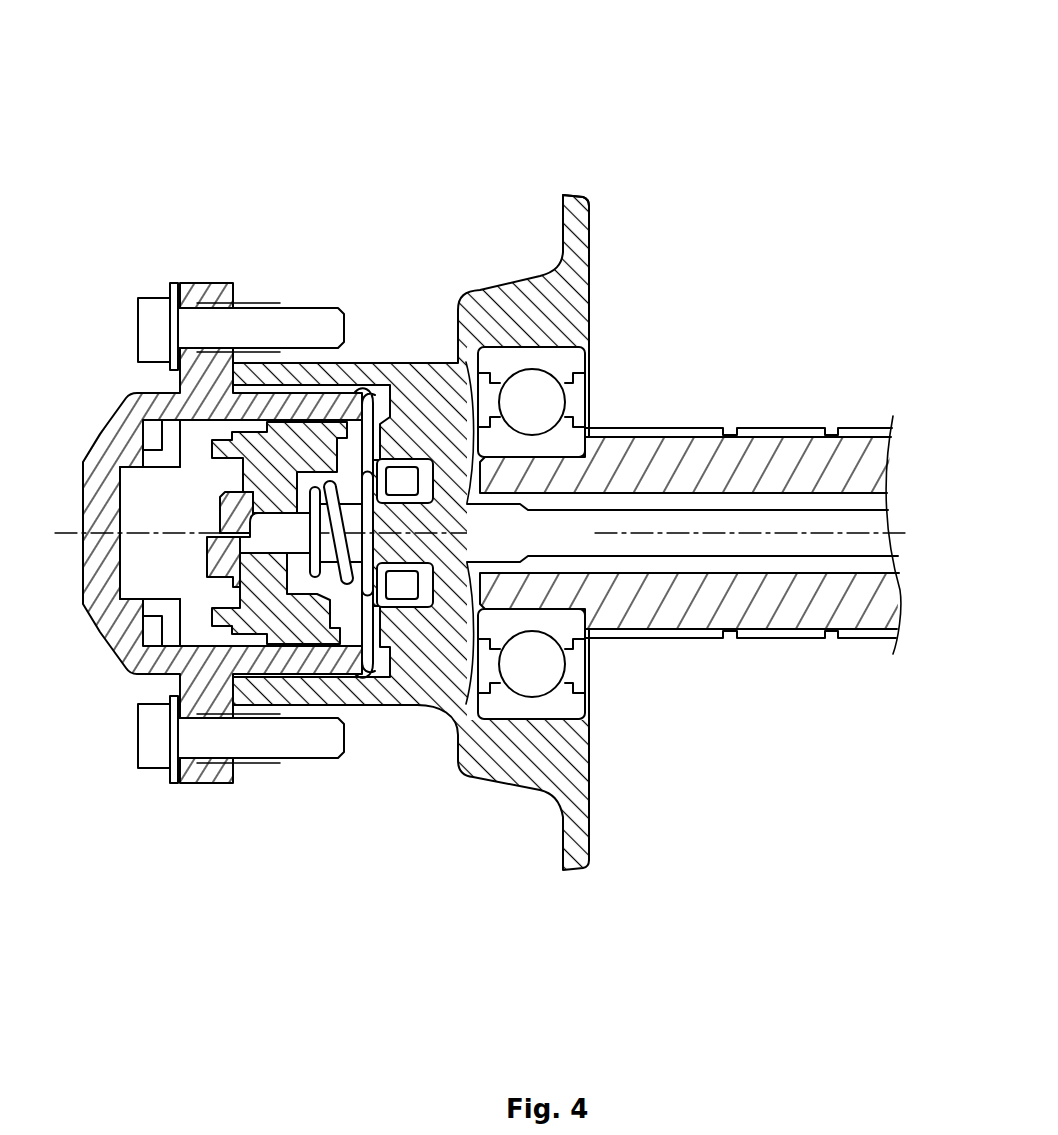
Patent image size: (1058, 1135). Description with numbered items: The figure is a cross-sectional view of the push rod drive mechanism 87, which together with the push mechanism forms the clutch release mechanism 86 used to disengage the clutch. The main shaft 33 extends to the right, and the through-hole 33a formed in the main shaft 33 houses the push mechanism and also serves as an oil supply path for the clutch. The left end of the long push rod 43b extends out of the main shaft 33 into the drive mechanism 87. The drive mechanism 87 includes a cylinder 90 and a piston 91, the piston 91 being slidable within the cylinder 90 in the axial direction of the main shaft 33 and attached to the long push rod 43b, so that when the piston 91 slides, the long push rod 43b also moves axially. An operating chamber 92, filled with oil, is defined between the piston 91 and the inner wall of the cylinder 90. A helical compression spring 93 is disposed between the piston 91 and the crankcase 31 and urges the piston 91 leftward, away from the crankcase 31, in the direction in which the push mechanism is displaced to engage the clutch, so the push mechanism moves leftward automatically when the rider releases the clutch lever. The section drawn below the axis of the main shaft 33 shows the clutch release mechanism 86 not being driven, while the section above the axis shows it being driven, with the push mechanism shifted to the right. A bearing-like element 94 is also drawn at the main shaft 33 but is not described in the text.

The clutch release mechanism 86 is at (752, 106).
The drive mechanism 87 is at (615, 162).
The crankcase 31 is at (587, 810).
The cylinder 90 is at (102, 430).
The piston 91 is at (318, 637).
The operating chamber 92 is at (185, 579).
The helical compression spring 93 is at (347, 476).
The bearing 94 is at (588, 703).
The main shaft 33 is at (781, 428).
The through-hole 33a is at (762, 616).
The long push rod 43b is at (645, 510).